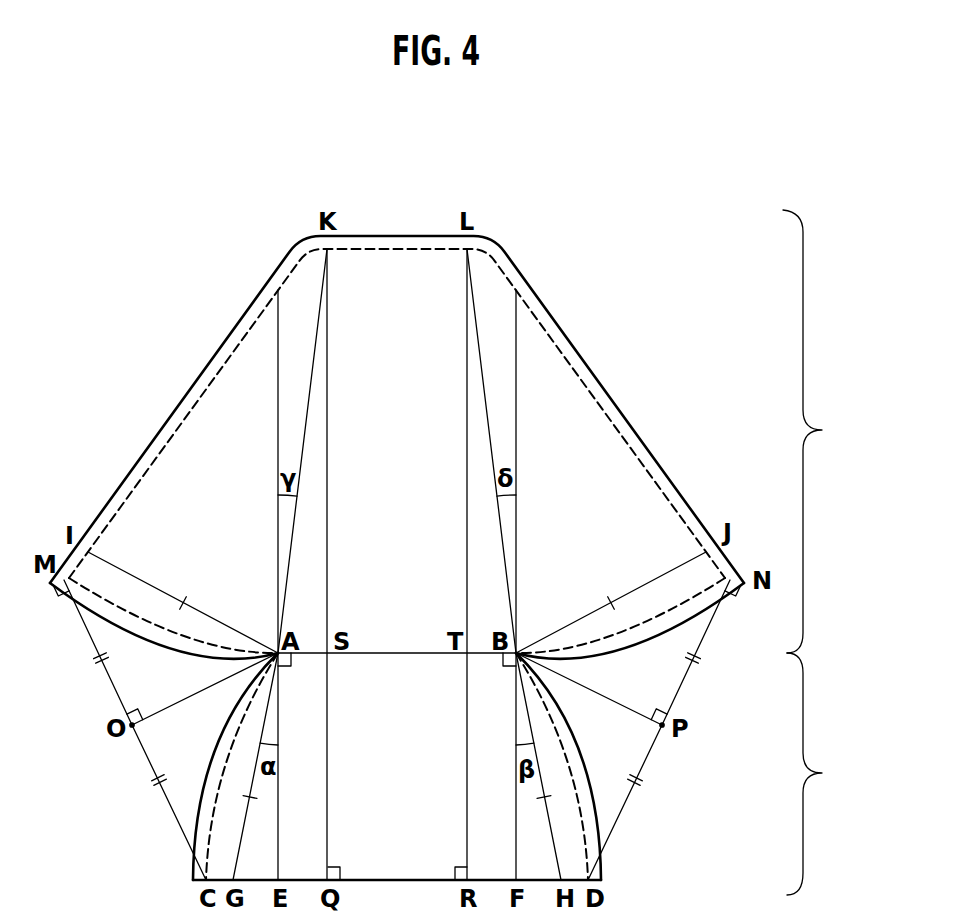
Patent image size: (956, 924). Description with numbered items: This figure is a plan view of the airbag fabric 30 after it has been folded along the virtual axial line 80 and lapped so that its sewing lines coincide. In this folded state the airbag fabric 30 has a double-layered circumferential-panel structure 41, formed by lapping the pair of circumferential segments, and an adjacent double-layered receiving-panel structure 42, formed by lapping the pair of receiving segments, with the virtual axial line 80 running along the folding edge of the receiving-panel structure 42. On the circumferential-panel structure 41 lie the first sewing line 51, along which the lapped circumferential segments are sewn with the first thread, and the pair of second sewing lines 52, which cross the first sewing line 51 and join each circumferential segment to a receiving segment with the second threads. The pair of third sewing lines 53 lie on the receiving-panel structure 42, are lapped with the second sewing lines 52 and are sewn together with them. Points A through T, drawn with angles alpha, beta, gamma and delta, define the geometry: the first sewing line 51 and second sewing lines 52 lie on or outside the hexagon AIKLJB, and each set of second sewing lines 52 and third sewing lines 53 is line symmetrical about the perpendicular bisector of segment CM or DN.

The airbag fabric 30 is at (155, 306).
The circumferential-panel structure 41 is at (821, 431).
The receiving-panel structure 42 is at (823, 774).
The first sewing line 51 is at (619, 433).
The second sewing lines 52 is at (142, 620).
The third sewing lines 53 is at (207, 843).
The virtual axial line 80 is at (397, 880).